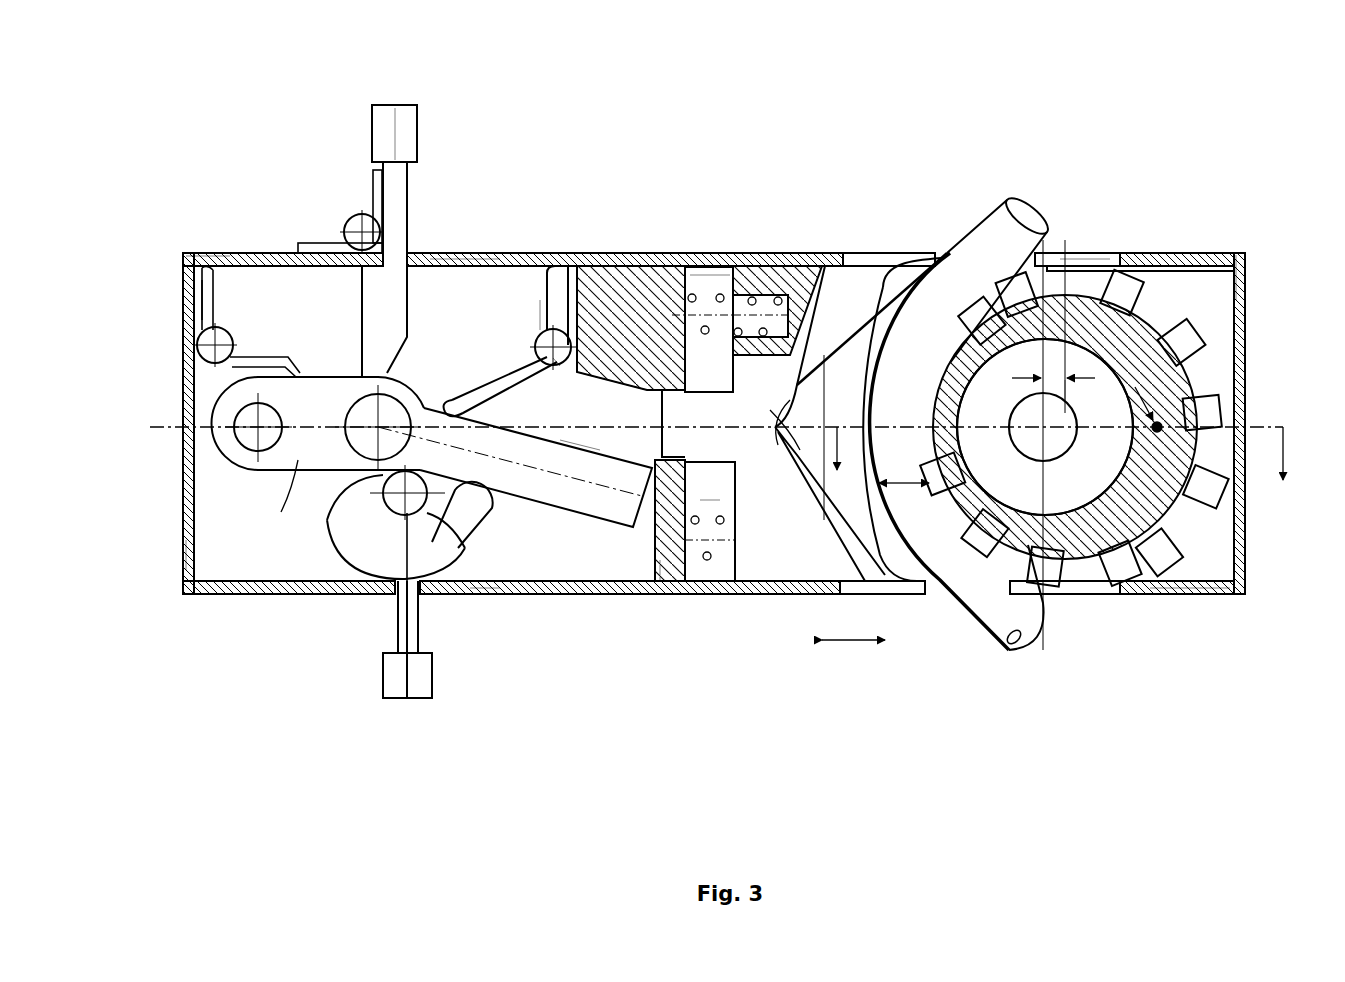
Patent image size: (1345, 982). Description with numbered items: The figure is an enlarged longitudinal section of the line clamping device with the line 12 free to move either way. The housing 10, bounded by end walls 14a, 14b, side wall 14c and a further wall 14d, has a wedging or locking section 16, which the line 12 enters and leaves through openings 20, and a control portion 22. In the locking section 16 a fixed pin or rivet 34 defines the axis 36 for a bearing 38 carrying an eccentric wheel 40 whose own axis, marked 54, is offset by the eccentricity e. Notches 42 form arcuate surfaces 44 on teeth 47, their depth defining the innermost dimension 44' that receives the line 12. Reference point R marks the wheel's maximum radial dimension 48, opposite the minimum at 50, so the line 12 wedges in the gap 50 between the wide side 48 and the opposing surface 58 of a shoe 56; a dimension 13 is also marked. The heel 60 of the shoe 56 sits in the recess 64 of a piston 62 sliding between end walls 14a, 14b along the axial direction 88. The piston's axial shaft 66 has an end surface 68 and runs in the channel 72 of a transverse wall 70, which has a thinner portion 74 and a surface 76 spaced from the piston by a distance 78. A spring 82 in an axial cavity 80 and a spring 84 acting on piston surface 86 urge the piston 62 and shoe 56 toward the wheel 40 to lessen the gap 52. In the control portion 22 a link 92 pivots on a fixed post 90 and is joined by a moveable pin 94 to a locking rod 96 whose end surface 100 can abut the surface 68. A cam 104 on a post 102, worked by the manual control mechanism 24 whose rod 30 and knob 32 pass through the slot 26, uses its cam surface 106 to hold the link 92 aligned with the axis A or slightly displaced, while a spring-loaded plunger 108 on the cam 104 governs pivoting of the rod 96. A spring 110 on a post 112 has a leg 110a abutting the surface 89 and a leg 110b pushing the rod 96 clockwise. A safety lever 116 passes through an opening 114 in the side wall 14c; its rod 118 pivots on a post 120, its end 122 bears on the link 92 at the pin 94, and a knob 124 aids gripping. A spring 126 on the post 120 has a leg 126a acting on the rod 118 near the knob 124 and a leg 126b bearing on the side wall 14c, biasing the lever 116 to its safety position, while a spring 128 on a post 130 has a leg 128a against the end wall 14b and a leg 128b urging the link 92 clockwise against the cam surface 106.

The housing 10 is at (722, 108).
The line 12 is at (1040, 232).
The stroke distance 13 is at (1069, 437).
The end wall 14a is at (1243, 268).
The end wall 14b is at (188, 546).
The side wall 14c is at (200, 250).
The housing wall 14d is at (1190, 596).
The wedging or locking section 16 is at (948, 183).
The openings 20 is at (1088, 258).
The control portion 22 is at (224, 198).
The manual control mechanism 24 is at (376, 637).
The slot 26 is at (492, 588).
The rod or shaft 30 is at (416, 625).
The knob or gripping portion 32 is at (420, 692).
The fixed pin or rivet 34 is at (1030, 440).
The center or axis of rotation 36 is at (1038, 425).
The bearing 38 is at (1190, 542).
The eccentric wheel 40 is at (1220, 458).
The notches 42 is at (1152, 310).
The arcuate surfaces 44 is at (1055, 486).
The radially innermost dimension 44' is at (1249, 407).
The teeth or projections 47 is at (1187, 268).
The reference point / maximum radial dimension 48 is at (1175, 418).
The gap or space 50 is at (962, 385).
The gap 52 is at (895, 485).
The eccentric axis 54 is at (1058, 384).
The shoe or pad 56 is at (882, 305).
The opposing surface 58 is at (940, 262).
The heel 60 is at (797, 470).
The piston 62 is at (812, 280).
The axial conforming recess 64 is at (775, 430).
The axial shaft 66 is at (703, 420).
The end surface 68 is at (658, 418).
The transverse wall 70 is at (642, 280).
The axial channel 72 is at (660, 455).
The thinner wall portion 74 is at (667, 567).
The transverse surface 76 is at (700, 265).
The distance 78 is at (683, 570).
The axial cavity 80 is at (772, 297).
The compression spring 82 is at (755, 296).
The compression spring 84 is at (707, 563).
The piston surface 86 is at (730, 567).
The axial direction 88 is at (850, 642).
The surface 89 is at (555, 368).
The fixed pin or post 90 is at (233, 430).
The link 92 is at (277, 463).
The moveable pin 94 is at (388, 410).
The locking rod or bar 96 is at (593, 500).
The end surface 100 is at (648, 515).
The post 102 is at (410, 530).
The cam 104 is at (383, 507).
The cam surface 106 is at (357, 540).
The spring loaded plunger or pusher 108 is at (470, 517).
The leaf or coil spring 110 is at (527, 313).
The spring leg 110a is at (562, 328).
The spring leg 110b is at (497, 395).
The post 112 is at (558, 264).
The opening 114 is at (470, 262).
The safety lever 116 is at (432, 128).
The rod 118 is at (405, 203).
The post 120 is at (360, 225).
The lever end 122 is at (388, 308).
The knob or gripping member 124 is at (400, 118).
The leaf or coil spring 126 is at (348, 175).
The spring leg 126a is at (373, 168).
The spring leg 126b is at (300, 243).
The spring 128 is at (168, 340).
The spring leg 128a is at (200, 296).
The spring leg 128b is at (263, 357).
The post 130 is at (222, 340).
The axis A is at (279, 495).
The reference point R is at (1148, 409).
The eccentricity e is at (1044, 379).